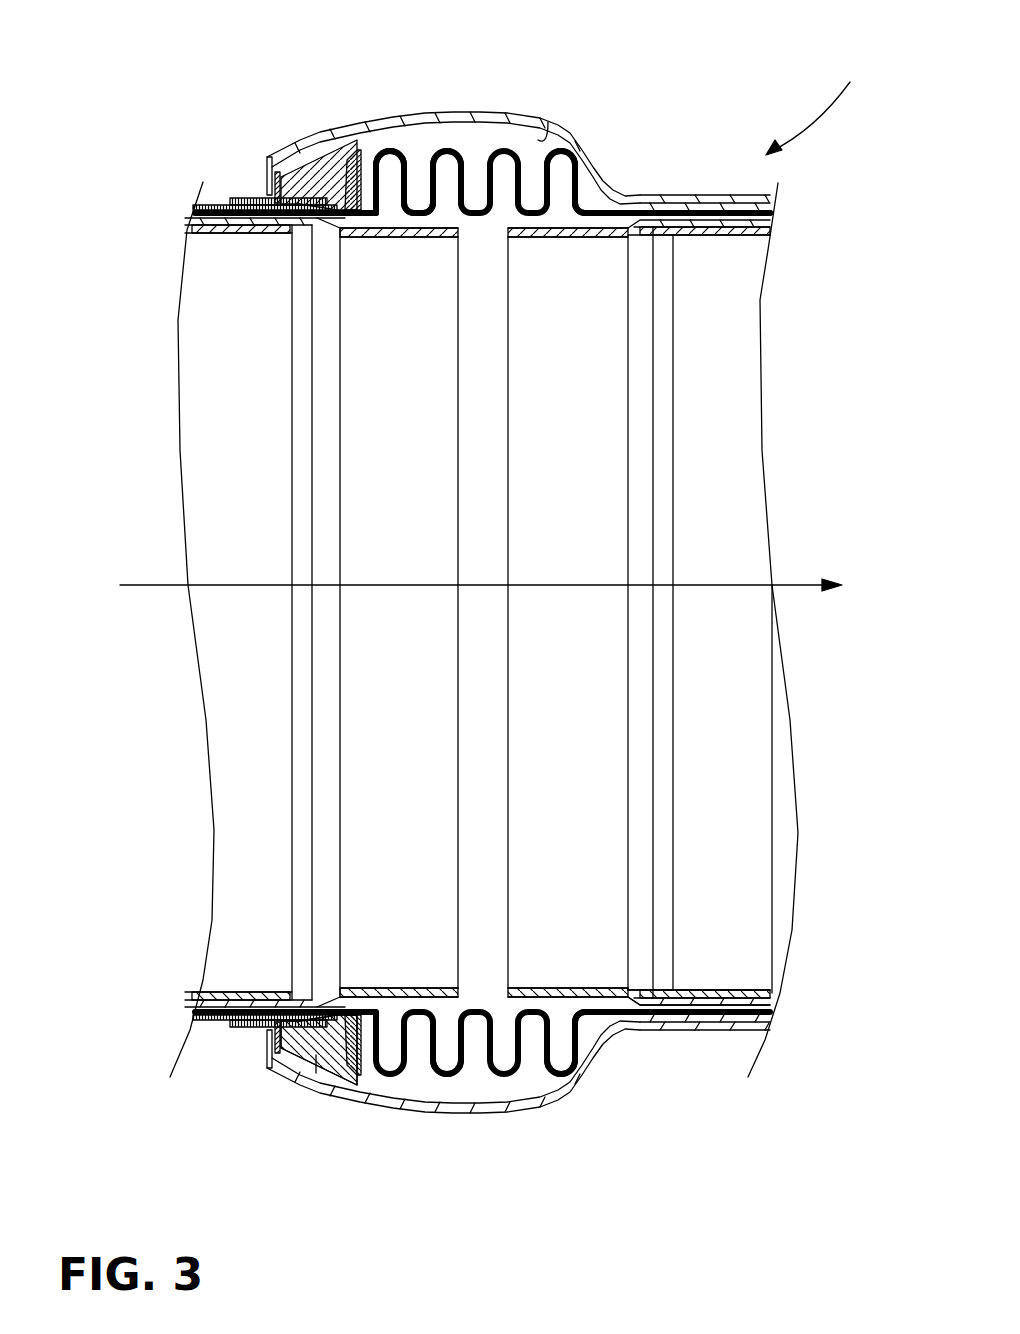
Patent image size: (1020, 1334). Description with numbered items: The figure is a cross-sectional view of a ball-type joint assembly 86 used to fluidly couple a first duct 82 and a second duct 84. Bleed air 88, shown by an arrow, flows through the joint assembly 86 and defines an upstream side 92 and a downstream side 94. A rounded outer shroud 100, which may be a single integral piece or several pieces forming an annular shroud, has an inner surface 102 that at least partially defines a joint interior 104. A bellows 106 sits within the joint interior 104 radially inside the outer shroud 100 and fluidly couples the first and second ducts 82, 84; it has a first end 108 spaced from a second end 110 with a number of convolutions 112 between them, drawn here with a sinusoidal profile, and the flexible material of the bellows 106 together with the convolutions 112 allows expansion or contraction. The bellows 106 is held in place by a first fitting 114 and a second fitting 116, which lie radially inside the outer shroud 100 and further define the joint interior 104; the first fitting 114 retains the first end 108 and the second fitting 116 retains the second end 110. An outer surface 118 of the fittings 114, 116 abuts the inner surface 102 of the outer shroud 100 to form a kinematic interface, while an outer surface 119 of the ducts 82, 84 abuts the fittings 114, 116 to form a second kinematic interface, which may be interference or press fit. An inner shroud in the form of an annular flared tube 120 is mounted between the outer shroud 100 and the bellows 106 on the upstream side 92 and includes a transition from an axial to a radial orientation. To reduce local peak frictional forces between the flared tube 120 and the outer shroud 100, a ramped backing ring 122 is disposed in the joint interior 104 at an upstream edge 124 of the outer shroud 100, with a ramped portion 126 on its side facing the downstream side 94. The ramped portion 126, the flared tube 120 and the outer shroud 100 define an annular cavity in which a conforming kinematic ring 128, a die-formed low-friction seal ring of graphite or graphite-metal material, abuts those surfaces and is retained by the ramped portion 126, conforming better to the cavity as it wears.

The first duct 82 is at (243, 993).
The second duct 84 is at (753, 993).
The joint assembly 86 is at (812, 105).
The bleed air 88 is at (168, 585).
The upstream side 92 is at (178, 385).
The downstream side 94 is at (762, 452).
The outer shroud 100 is at (455, 110).
The inner surface 102 is at (557, 227).
The joint interior 104 is at (495, 137).
The bellows 106 is at (577, 1080).
The first end 108 is at (222, 197).
The second end 110 is at (657, 213).
The convolutions 112 is at (393, 145).
The first fitting 114 is at (253, 232).
The second fitting 116 is at (760, 247).
The outer surface 118 is at (580, 160).
The outer surface 119 is at (205, 1025).
The annular flared tube 120 is at (353, 1073).
The ramped backing ring 122 is at (262, 200).
The upstream edge 124 is at (265, 170).
The ramped portion 126 is at (297, 145).
The kinematic ring 128 is at (313, 1077).